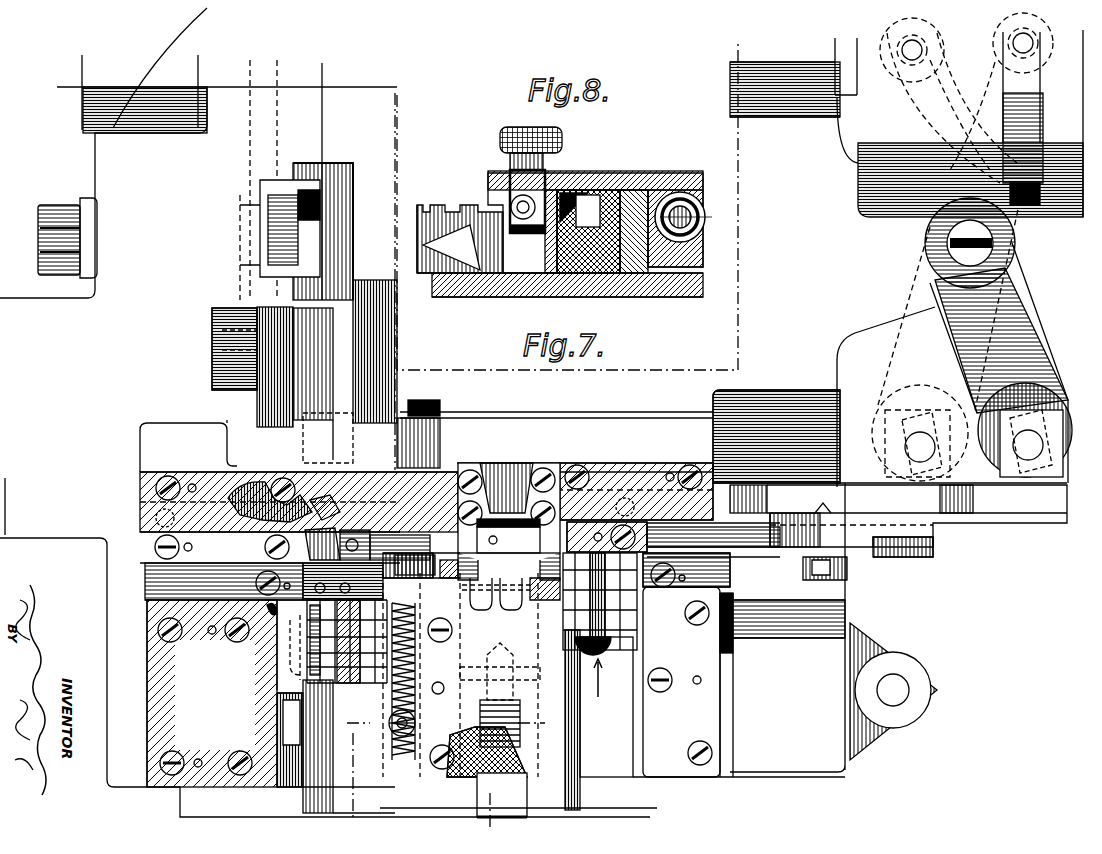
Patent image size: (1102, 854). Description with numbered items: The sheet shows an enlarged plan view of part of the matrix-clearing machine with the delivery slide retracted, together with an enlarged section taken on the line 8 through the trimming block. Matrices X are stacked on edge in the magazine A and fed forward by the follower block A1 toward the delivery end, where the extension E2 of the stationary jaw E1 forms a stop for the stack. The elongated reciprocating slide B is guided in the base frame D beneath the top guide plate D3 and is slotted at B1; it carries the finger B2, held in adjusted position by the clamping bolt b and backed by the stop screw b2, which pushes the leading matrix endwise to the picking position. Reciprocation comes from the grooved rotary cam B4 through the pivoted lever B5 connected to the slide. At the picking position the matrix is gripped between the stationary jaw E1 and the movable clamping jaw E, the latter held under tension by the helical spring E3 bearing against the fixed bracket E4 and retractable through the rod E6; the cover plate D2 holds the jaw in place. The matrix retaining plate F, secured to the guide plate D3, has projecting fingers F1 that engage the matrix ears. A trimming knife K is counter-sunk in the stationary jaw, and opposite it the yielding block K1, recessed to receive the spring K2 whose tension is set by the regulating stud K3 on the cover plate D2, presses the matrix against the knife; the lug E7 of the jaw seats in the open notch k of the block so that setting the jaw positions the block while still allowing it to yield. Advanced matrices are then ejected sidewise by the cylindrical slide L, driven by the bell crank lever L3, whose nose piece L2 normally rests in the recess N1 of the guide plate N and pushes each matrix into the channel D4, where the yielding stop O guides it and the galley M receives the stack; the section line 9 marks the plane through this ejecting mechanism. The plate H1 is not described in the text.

In FIG. 7, the section line 9— 9 is at (304, 440).
In FIG. 7, the cylindrical slide L is at (353, 200).
In FIG. 7, the bell crank lever L3 is at (310, 205).
In FIG. 7, the nose piece or pad L2 is at (357, 545).
In FIG. 8, the base frame D is at (542, 262).
In FIG. 7, the base frame D is at (541, 412).
In FIG. 8, the cover plate D2 is at (613, 173).
In FIG. 7, the top guide plate D3 is at (152, 510).
In FIG. 7, the channel D4 is at (411, 746).
In FIG. 7, the cover plate H1 is at (177, 430).
In FIG. 7, the slot B1 is at (293, 482).
In FIG. 7, the reciprocating slide B is at (901, 432).
In FIG. 7, the finger B2 is at (768, 550).
In FIG. 7, the rotary cam B4 is at (968, 128).
In FIG. 7, the pivoted lever B5 is at (1028, 280).
In FIG. 7, the clamping bolt b is at (815, 580).
In FIG. 7, the stop screw b2 is at (880, 557).
In FIG. 8, the clamping jaw E is at (637, 258).
In FIG. 7, the clamping jaw E is at (322, 505).
In FIG. 7, the stationary jaw E1 is at (508, 536).
In FIG. 7, the extension E2 is at (607, 523).
In FIG. 8, the helical spring E3 is at (697, 205).
In FIG. 7, the helical spring E3 is at (478, 777).
In FIG. 7, the fixed bracket E4 is at (530, 773).
In FIG. 7, the rod E6 is at (555, 588).
In FIG. 7, the lug E7 is at (495, 600).
In FIG. 7, the matrix retaining plate F is at (476, 470).
In FIG. 7, the projecting fingers F1 is at (463, 537).
In FIG. 7, the guide plate N is at (270, 549).
In FIG. 7, the recess N1 is at (330, 509).
In FIG. 7, the trimming knife K is at (420, 545).
In FIG. 8, the yielding block K1 is at (543, 258).
In FIG. 7, the yielding block K1 is at (421, 578).
In FIG. 7, the spring K2 is at (420, 676).
In FIG. 8, the regulating stud K3 is at (552, 172).
In FIG. 7, the regulating stud K3 is at (417, 722).
In FIG. 7, the open notch k is at (444, 579).
In FIG. 7, the matrices X is at (617, 617).
In FIG. 7, the stop O is at (272, 714).
In FIG. 7, the galley M is at (362, 800).
In FIG. 7, the section line 8— 8 is at (445, 723).
In FIG. 7, the magazine A is at (657, 792).
In FIG. 7, the follower block A1 is at (599, 720).